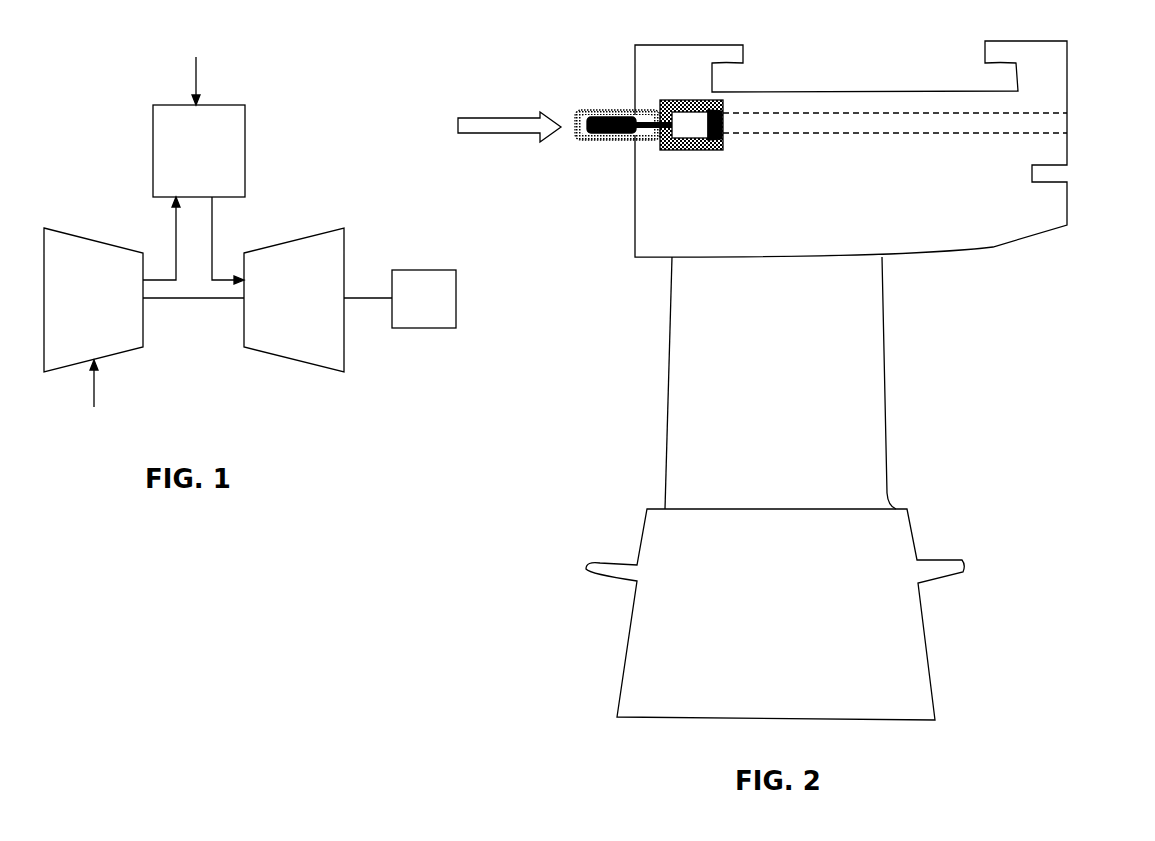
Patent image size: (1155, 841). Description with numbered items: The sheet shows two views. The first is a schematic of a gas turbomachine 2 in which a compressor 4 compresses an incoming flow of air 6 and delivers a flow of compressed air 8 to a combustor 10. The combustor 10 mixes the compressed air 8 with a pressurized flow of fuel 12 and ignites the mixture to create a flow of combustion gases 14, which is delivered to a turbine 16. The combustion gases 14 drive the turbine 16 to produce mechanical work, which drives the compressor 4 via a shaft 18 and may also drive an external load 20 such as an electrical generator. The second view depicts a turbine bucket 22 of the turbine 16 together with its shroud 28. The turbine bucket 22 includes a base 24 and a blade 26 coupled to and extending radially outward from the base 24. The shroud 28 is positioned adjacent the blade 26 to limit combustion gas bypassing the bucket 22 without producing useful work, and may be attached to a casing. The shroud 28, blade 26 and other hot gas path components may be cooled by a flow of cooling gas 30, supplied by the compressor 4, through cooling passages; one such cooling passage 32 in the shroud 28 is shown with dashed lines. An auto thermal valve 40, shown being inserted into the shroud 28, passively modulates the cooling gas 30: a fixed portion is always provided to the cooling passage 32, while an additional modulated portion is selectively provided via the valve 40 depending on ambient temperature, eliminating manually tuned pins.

In FIG. 1, the gas turbomachine 2 is at (85, 132).
In FIG. 1, the compressor 4 is at (93, 300).
In FIG. 1, the incoming flow of air 6 is at (94, 385).
In FIG. 1, the flow of compressed air 8 is at (175, 251).
In FIG. 1, the combustor 10 is at (199, 151).
In FIG. 1, the pressurized flow of fuel 12 is at (196, 75).
In FIG. 1, the flow of combustion gases 14 is at (212, 250).
In FIG. 1, the turbine 16 is at (294, 300).
In FIG. 1, the shaft 18 is at (203, 300).
In FIG. 1, the external load 20 is at (400, 299).
In FIG. 2, the turbine bucket 22 is at (740, 371).
In FIG. 2, the base 24 is at (625, 650).
In FIG. 2, the blade 26 is at (668, 359).
In FIG. 2, the shroud 28 is at (993, 247).
In FIG. 2, the flow of cooling gas 30 is at (478, 118).
In FIG. 2, the cooling passage 32 is at (902, 115).
In FIG. 2, the auto thermal valve 40 is at (602, 99).